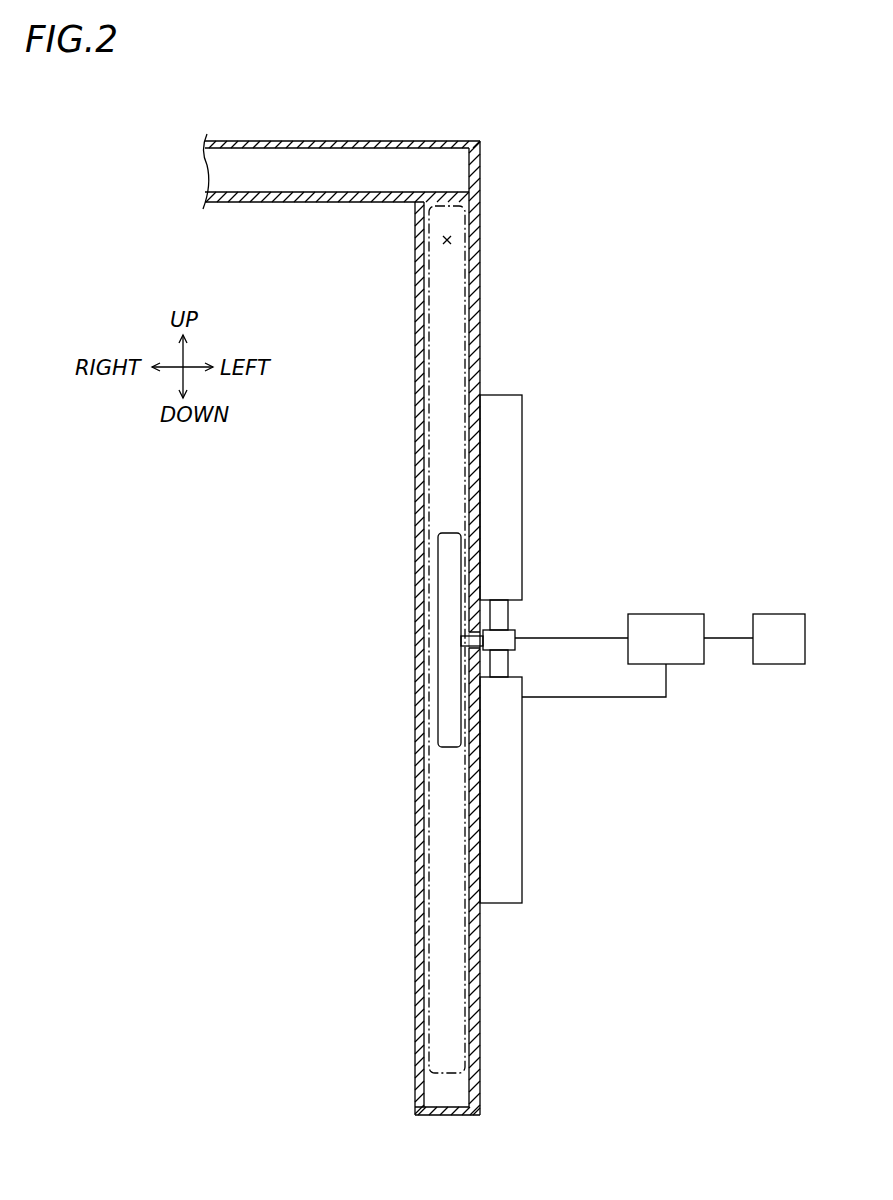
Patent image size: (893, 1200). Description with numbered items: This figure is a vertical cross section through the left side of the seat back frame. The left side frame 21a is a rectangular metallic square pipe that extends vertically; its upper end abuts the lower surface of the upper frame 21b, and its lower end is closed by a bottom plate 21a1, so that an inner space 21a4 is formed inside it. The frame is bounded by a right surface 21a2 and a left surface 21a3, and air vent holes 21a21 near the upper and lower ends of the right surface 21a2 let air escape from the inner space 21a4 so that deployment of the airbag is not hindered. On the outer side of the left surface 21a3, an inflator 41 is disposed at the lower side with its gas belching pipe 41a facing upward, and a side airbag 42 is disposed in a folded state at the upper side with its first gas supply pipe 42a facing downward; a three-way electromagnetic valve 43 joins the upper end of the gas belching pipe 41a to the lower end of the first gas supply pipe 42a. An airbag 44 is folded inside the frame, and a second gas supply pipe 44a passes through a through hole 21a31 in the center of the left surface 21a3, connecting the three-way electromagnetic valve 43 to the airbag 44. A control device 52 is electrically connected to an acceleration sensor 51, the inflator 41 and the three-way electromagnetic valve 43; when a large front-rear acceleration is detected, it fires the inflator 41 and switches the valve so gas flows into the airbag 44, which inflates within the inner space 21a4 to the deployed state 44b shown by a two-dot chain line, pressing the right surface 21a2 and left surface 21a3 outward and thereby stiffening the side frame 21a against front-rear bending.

The side frame 21a is at (457, 660).
The upper frame 21b is at (318, 140).
The bottom plate 21a1 is at (445, 1115).
The right surface 21a2 is at (420, 285).
The left surface 21a3 is at (480, 330).
The inner space 21a4 is at (447, 240).
The air vent hole 21a21 is at (418, 218).
The through hole 21a31 is at (466, 640).
The inflator 41 is at (522, 760).
The gas belching pipe 41a is at (510, 660).
The side airbag 42 is at (522, 433).
The first gas supply pipe 42a is at (510, 612).
The three-way electromagnetic valve 43 is at (516, 638).
The airbag 44 is at (438, 562).
The second gas supply pipe 44a is at (466, 645).
The deployed state 44b is at (430, 340).
The acceleration sensor 51 is at (780, 614).
The control device 52 is at (680, 614).